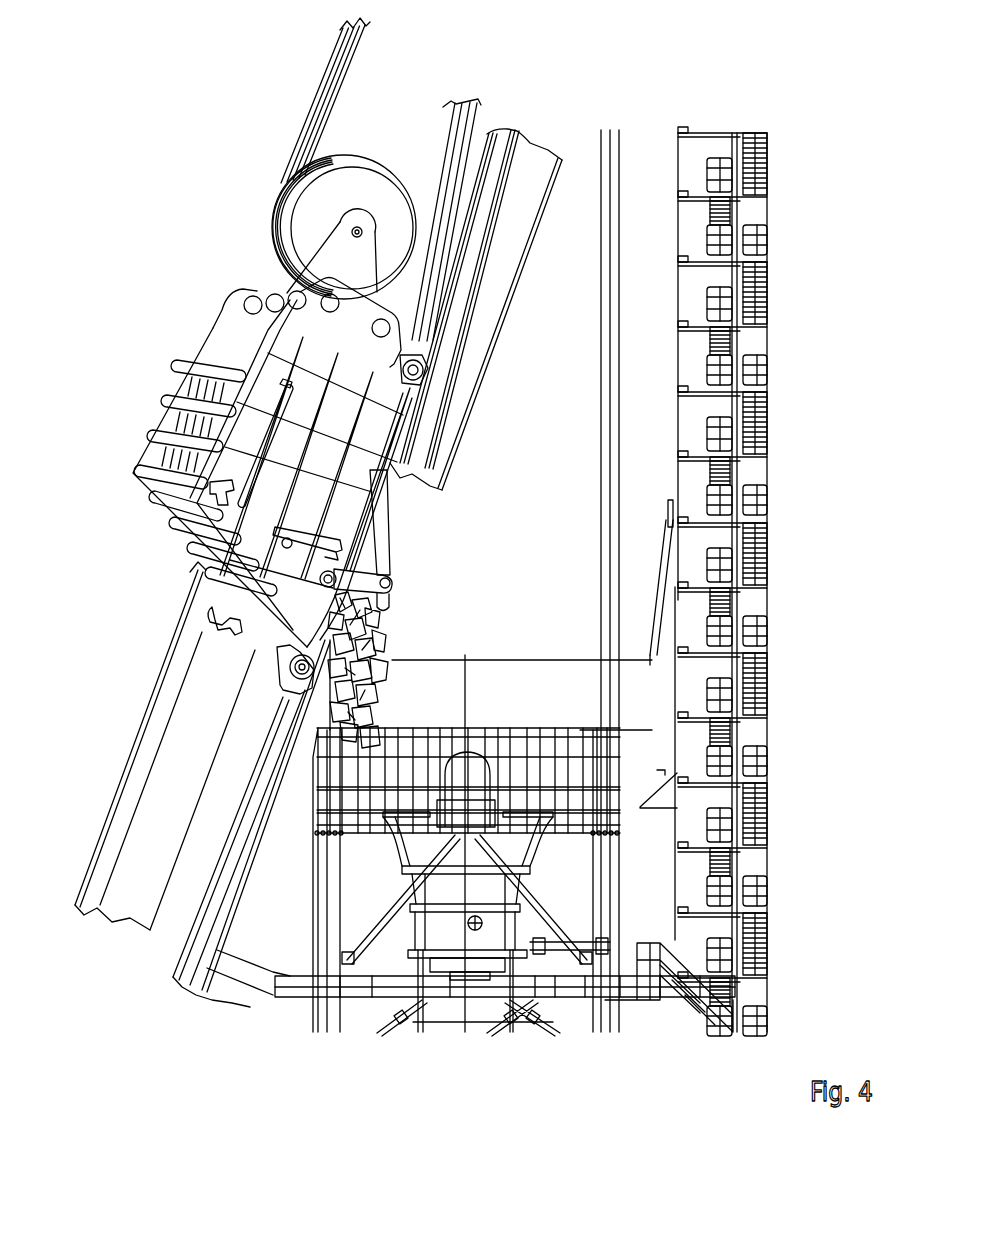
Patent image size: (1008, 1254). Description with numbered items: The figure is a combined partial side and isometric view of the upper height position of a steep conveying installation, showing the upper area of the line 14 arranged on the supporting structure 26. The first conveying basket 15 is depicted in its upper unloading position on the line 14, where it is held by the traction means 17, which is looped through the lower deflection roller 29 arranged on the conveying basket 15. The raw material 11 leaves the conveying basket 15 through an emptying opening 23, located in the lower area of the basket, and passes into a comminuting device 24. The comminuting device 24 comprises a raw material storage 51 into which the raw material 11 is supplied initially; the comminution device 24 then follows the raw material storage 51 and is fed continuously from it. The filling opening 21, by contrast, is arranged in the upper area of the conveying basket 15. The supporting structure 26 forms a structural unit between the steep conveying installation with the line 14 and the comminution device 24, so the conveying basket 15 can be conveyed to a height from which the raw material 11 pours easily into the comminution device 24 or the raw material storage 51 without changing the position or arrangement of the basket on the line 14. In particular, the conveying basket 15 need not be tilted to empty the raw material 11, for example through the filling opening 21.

The raw material 11 is at (368, 637).
The line 14 is at (460, 397).
The first conveying basket 15 is at (157, 420).
The traction means 17 is at (313, 122).
The filling opening 21 is at (233, 348).
The emptying opening 23 is at (380, 557).
The comminuting device 24 is at (533, 870).
The supporting structure 26 is at (617, 903).
The lower deflection roller 29 is at (313, 217).
The raw material storage 51 is at (587, 773).